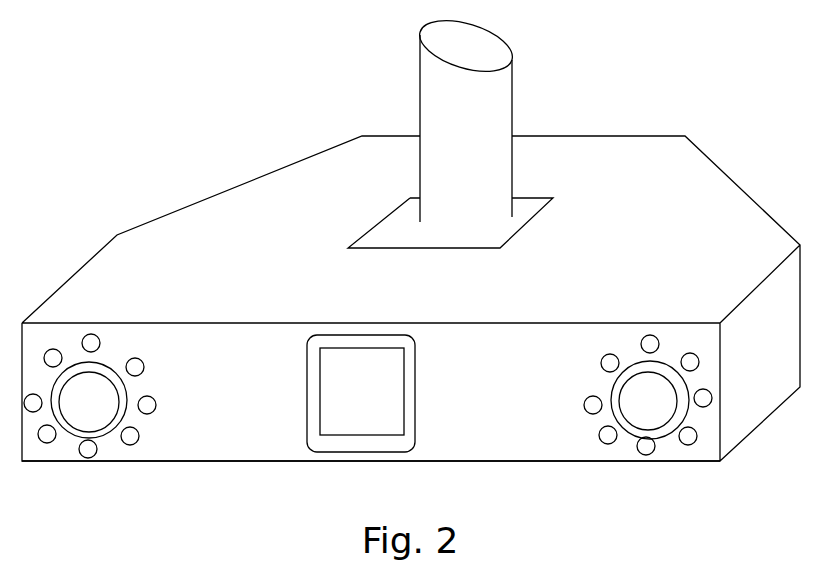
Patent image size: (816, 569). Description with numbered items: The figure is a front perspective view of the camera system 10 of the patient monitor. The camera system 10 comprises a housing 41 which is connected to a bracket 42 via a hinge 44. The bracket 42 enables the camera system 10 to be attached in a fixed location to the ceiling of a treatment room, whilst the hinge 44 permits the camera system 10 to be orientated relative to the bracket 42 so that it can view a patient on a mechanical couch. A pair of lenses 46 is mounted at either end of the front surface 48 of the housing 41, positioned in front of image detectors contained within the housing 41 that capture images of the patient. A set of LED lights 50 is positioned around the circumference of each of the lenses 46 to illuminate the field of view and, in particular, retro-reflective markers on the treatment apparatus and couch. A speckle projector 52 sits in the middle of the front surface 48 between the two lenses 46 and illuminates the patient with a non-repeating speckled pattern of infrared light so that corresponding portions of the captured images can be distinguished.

The camera system 10 is at (240, 125).
The housing 41 is at (735, 228).
The bracket 42 is at (500, 95).
The hinge 44 is at (537, 212).
The lenses 46 is at (125, 388).
The front surface 48 is at (530, 462).
The LED lights 50 is at (91, 333).
The speckle projector 52 is at (418, 388).